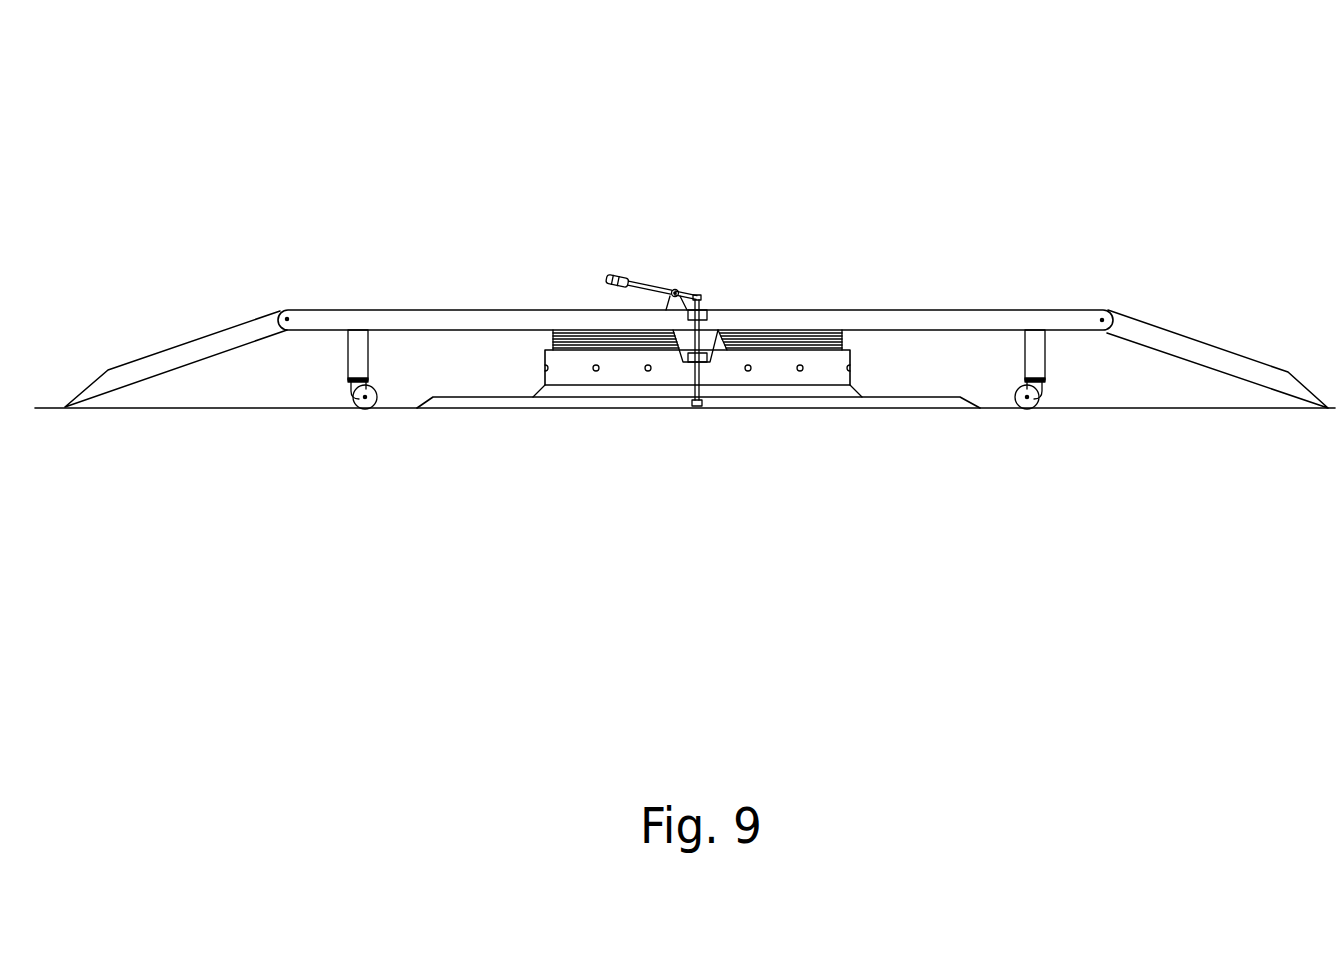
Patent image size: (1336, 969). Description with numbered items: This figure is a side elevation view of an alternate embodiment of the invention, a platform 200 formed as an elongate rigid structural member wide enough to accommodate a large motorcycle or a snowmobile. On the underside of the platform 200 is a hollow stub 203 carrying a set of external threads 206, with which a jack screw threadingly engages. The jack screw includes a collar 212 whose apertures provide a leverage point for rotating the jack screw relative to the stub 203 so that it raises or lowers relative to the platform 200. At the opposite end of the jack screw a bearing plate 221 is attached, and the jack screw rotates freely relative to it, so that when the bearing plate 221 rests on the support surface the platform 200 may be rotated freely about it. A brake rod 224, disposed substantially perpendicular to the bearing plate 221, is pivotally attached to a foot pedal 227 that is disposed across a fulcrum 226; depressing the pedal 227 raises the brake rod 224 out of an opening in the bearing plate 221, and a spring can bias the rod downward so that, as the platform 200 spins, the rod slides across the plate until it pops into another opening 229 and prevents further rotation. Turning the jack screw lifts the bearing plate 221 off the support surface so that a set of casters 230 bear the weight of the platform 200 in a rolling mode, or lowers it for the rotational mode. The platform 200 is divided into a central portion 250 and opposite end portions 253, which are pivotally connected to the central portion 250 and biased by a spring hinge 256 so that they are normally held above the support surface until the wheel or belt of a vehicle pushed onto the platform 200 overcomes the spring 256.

The platform 200 is at (783, 145).
The hollow stub 203 is at (793, 338).
The external threads 206 is at (613, 277).
The collar 212 is at (827, 372).
The bearing plate 221 is at (503, 402).
The brake rod 224 is at (705, 365).
The fulcrum 226 is at (685, 292).
The foot pedal 227 is at (547, 345).
The opening 229 is at (695, 405).
The casters 230 is at (360, 402).
The central portion 250 is at (900, 322).
The end portions 253 is at (167, 353).
The spring hinge 256 is at (283, 310).